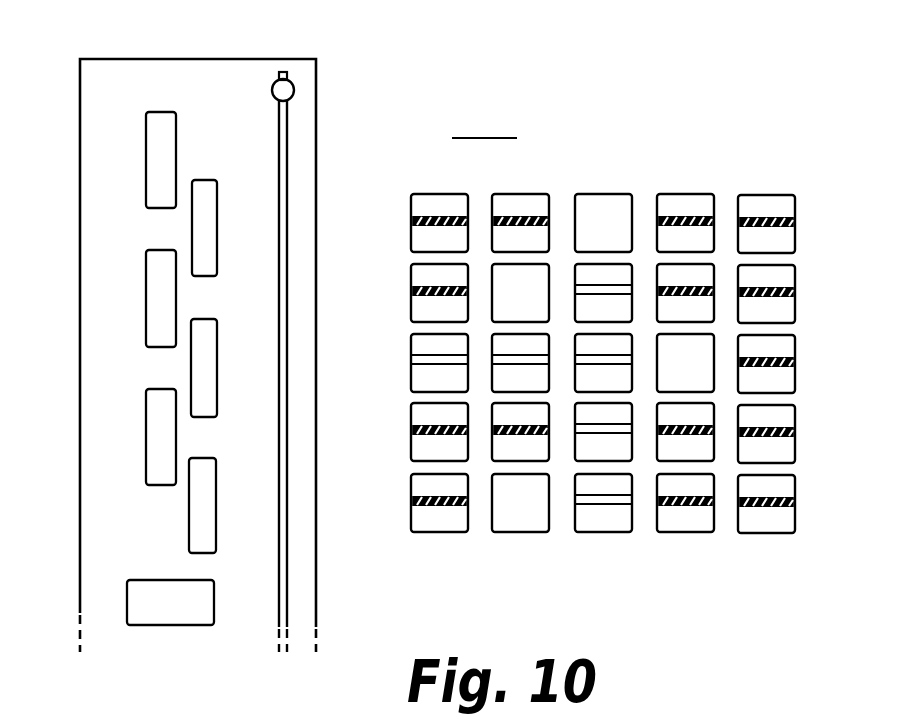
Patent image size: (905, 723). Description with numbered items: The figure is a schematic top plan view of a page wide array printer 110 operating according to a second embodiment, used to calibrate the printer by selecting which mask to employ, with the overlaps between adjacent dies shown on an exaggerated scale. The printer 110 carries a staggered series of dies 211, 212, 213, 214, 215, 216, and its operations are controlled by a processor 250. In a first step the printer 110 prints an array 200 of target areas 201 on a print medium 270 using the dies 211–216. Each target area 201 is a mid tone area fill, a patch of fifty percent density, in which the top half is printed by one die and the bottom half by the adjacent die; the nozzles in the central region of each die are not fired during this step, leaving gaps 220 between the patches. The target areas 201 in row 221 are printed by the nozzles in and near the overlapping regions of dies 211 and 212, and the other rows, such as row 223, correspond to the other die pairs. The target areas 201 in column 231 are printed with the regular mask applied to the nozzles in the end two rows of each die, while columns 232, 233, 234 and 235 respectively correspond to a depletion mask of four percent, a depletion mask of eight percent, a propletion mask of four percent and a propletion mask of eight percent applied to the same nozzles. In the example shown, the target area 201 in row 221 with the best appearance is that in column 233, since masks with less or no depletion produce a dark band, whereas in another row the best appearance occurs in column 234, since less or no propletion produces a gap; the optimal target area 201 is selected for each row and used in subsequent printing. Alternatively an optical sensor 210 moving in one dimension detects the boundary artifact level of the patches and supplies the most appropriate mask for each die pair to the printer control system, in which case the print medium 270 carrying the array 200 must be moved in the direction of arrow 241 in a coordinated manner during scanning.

The printer 110 is at (213, 88).
The optical sensor 210 is at (285, 90).
The die 211 is at (160, 153).
The die 212 is at (205, 226).
The die 213 is at (160, 300).
The die 214 is at (203, 365).
The die 215 is at (158, 437).
The die 216 is at (200, 523).
The processor 250 is at (143, 607).
The array 200 is at (745, 178).
The print medium 270 is at (620, 110).
The arrow 241 is at (452, 138).
The target area 201 is at (683, 207).
The gap 220 is at (804, 228).
The row 221 is at (803, 218).
The row 223 is at (801, 366).
The column 231 is at (436, 536).
The column 232 is at (518, 536).
The column 233 is at (599, 536).
The column 234 is at (685, 374).
The column 235 is at (804, 398).